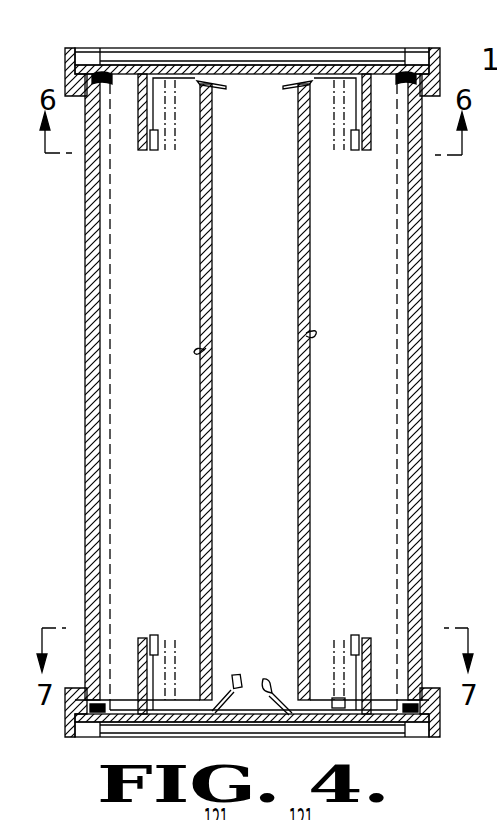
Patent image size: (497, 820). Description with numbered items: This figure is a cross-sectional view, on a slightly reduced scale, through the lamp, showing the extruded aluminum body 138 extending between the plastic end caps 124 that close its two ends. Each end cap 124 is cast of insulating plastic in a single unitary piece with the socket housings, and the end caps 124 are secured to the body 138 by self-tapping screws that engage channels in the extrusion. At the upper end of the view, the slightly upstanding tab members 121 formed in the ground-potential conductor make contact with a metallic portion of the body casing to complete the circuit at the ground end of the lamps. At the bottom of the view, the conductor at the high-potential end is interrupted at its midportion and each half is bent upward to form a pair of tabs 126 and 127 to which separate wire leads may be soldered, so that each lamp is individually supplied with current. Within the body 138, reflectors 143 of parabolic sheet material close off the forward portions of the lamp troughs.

The upstanding tab members 121 is at (278, 85).
The end cap 124 is at (428, 48).
The tab 126 is at (235, 673).
The tab 127 is at (278, 688).
The body 138 is at (298, 240).
The reflector 143 is at (306, 334).